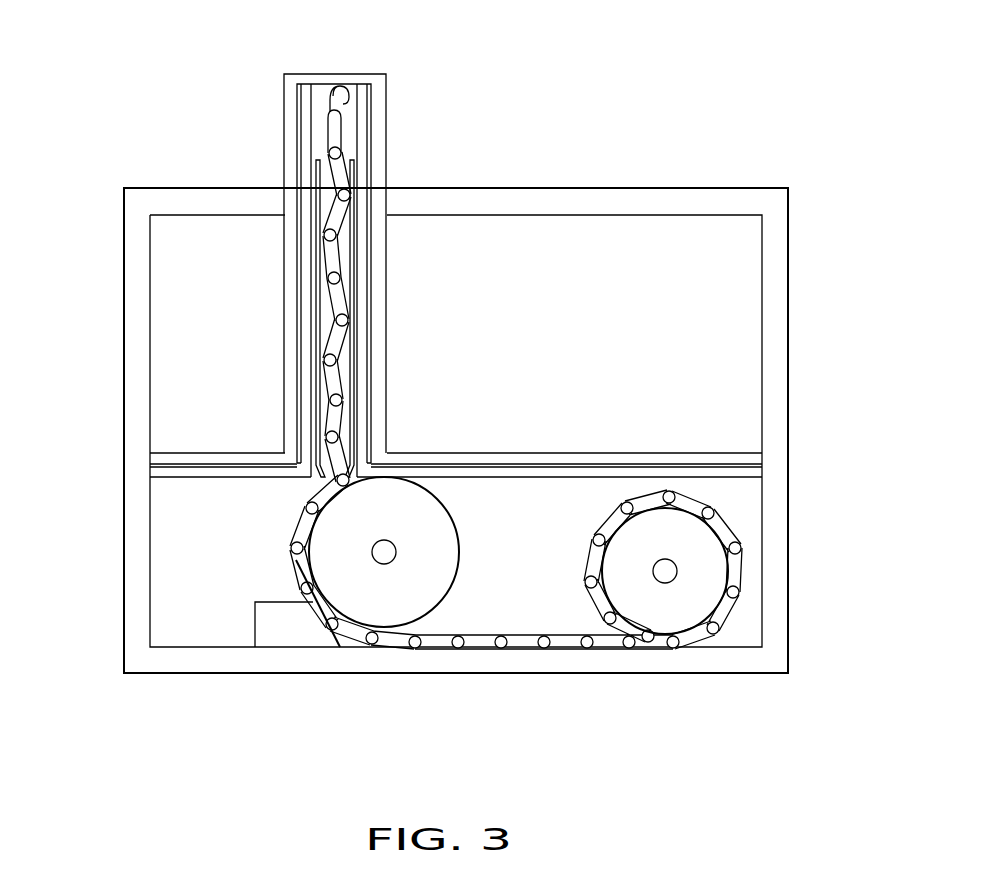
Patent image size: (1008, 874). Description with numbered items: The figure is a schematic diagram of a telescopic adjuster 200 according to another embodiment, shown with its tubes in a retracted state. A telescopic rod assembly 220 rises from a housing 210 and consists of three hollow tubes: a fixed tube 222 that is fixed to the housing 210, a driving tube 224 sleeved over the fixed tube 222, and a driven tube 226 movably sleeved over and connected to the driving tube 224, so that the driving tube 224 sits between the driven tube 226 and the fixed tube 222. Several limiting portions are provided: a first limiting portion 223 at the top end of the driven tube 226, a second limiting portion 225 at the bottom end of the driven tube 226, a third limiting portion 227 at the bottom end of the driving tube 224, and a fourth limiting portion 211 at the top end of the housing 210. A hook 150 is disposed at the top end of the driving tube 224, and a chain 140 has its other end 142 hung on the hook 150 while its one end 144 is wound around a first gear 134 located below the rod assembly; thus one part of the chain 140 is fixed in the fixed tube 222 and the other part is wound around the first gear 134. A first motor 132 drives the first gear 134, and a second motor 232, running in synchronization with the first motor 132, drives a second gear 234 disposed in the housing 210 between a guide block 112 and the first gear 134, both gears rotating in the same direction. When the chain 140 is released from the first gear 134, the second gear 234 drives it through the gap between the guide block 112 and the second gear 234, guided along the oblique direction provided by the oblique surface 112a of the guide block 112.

The telescopic adjuster 200 is at (808, 80).
The housing 210 is at (775, 230).
The fourth limiting portion 211 is at (170, 203).
The telescopic rod assembly 220 is at (354, 251).
The fixed tube 222 is at (352, 162).
The first limiting portion 223 is at (285, 73).
The driving tube 224 is at (362, 115).
The second limiting portion 225 is at (190, 455).
The driven tube 226 is at (378, 84).
The third limiting portion 227 is at (300, 465).
The hook 150 is at (330, 92).
The other end of the chain 142 is at (330, 125).
The chain 140 is at (516, 442).
The one end of the chain 144 is at (600, 630).
The second gear 234 is at (362, 608).
The second motor 232 is at (385, 560).
The first gear 134 is at (690, 535).
The first motor 132 is at (672, 570).
The guide block 112 is at (188, 653).
The oblique surface 112a is at (324, 610).